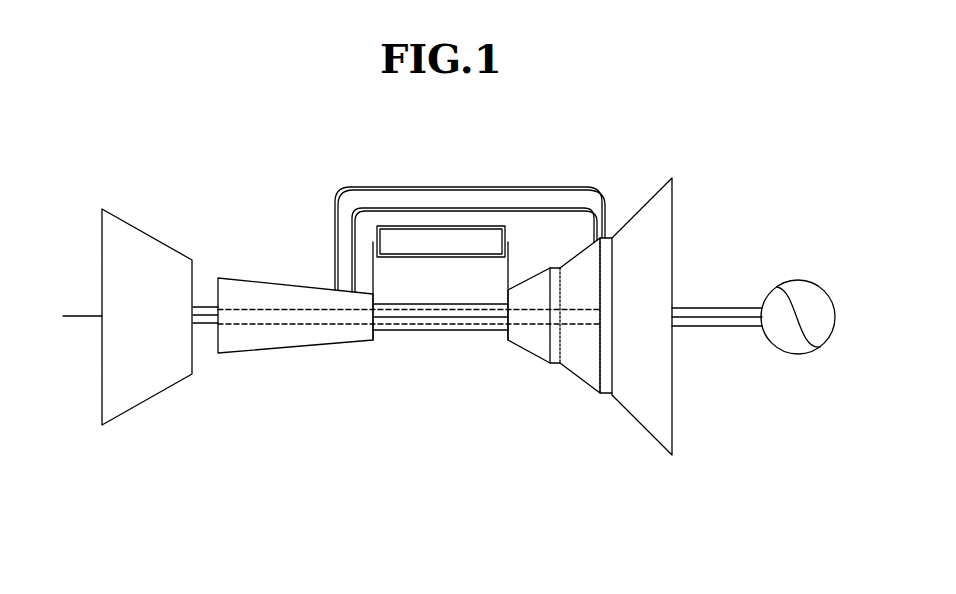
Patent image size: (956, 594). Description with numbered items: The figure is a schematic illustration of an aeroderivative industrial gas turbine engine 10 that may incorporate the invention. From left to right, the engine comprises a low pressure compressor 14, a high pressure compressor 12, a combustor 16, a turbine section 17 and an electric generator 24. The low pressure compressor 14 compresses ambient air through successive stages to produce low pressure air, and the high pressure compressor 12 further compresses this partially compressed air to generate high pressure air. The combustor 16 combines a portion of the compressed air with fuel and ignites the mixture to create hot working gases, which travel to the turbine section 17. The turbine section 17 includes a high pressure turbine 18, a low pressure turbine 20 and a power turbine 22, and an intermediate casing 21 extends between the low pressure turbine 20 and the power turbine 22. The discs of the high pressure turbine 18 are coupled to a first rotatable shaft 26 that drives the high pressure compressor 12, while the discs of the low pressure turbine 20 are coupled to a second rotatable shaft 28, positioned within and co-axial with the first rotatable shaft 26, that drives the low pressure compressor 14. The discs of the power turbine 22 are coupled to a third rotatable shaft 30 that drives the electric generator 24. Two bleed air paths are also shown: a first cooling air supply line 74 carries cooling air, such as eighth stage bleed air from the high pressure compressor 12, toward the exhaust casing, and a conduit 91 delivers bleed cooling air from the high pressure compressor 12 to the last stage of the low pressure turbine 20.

The gas turbine engine 10 is at (722, 162).
The high pressure compressor 12 is at (278, 278).
The low pressure compressor 14 is at (160, 232).
The combustor 16 is at (430, 220).
The turbine section 17 is at (613, 209).
The high pressure turbine 18 is at (523, 357).
The low pressure turbine 20 is at (577, 386).
The intermediate casing 21 is at (607, 397).
The power turbine 22 is at (678, 240).
The electric generator 24 is at (827, 288).
The first rotatable shaft 26 is at (455, 332).
The second rotatable shaft 28 is at (206, 328).
The third rotatable shaft 30 is at (708, 308).
The first cooling air supply line 74 is at (520, 186).
The conduit 91 is at (483, 208).